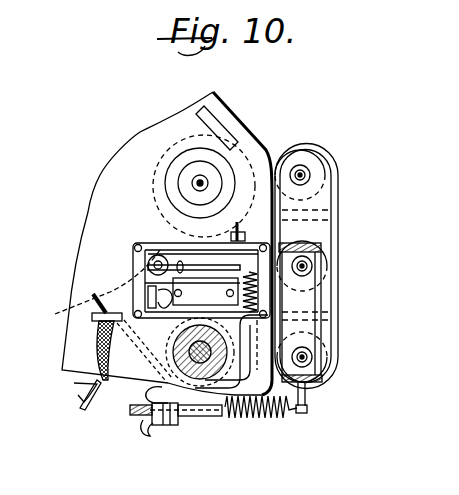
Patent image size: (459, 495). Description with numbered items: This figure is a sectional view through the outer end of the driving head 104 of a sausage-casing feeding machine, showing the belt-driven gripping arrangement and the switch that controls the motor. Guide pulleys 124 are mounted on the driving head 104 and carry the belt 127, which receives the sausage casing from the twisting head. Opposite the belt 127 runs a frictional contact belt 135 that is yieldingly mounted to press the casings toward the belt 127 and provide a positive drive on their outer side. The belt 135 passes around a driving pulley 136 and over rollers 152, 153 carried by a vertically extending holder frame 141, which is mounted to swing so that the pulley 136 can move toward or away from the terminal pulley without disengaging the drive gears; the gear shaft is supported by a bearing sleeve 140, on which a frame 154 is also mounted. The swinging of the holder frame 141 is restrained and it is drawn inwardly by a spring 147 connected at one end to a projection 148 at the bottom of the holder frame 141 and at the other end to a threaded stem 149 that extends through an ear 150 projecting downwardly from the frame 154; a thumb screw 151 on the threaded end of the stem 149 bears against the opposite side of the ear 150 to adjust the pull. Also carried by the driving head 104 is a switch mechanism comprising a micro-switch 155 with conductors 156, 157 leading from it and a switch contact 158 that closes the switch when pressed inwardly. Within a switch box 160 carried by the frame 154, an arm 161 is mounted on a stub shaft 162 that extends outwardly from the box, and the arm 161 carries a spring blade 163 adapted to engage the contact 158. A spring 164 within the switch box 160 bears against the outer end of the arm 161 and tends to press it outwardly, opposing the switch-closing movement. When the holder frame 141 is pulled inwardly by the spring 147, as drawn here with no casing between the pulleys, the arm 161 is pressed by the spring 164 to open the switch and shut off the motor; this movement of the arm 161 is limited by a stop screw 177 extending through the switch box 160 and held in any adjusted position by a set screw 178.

The driving head 104 is at (254, 117).
The guide pulleys 124 is at (158, 123).
The belt 127 is at (218, 108).
The frictional contact belt 135 is at (333, 217).
The driving pulley 136 is at (326, 368).
The bearing sleeve 140 is at (180, 357).
The holder frame 141 is at (310, 384).
The spring 147 is at (255, 418).
The projection 148 is at (310, 403).
The threaded stem 149 is at (200, 418).
The ear 150 is at (164, 427).
The thumb screw 151 is at (147, 428).
The roller 152 is at (330, 262).
The roller 153 is at (318, 163).
The frame 154 is at (158, 357).
The micro-switch 155 is at (235, 300).
The conductor 156 is at (74, 384).
The conductor 157 is at (86, 396).
The switch contact 158 is at (205, 291).
The switch box 160 is at (148, 264).
The arm 161 is at (180, 255).
The stub shaft 162 is at (150, 270).
The spring blade 163 is at (192, 265).
The spring 164 is at (300, 300).
The stop screw 177 is at (232, 236).
The set screw 178 is at (239, 236).